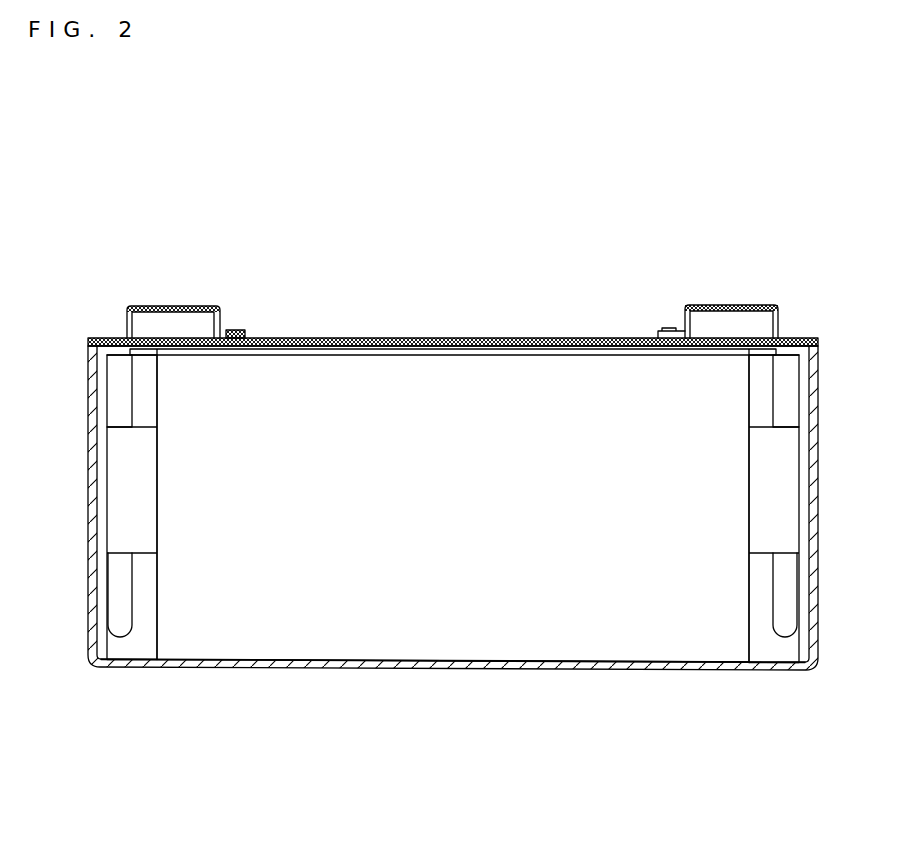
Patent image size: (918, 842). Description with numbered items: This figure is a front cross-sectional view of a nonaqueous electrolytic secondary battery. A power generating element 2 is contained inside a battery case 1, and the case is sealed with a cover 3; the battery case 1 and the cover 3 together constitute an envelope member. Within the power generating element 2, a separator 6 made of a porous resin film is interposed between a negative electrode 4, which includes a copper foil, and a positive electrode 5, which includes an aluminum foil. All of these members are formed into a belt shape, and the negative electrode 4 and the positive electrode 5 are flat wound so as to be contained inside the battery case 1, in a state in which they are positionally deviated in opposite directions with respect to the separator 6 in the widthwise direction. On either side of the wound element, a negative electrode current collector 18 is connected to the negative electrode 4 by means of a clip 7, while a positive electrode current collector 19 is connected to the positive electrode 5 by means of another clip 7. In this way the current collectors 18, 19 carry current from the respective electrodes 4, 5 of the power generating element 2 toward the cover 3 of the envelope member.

The battery case 1 is at (605, 664).
The power generating element 2 is at (372, 633).
The cover 3 is at (443, 338).
The negative electrode 4 is at (147, 647).
The positive electrode 5 is at (760, 643).
The separator 6 is at (288, 642).
The clip 7 is at (117, 502).
The negative electrode current collector 18 is at (117, 385).
The positive electrode current collector 19 is at (793, 383).